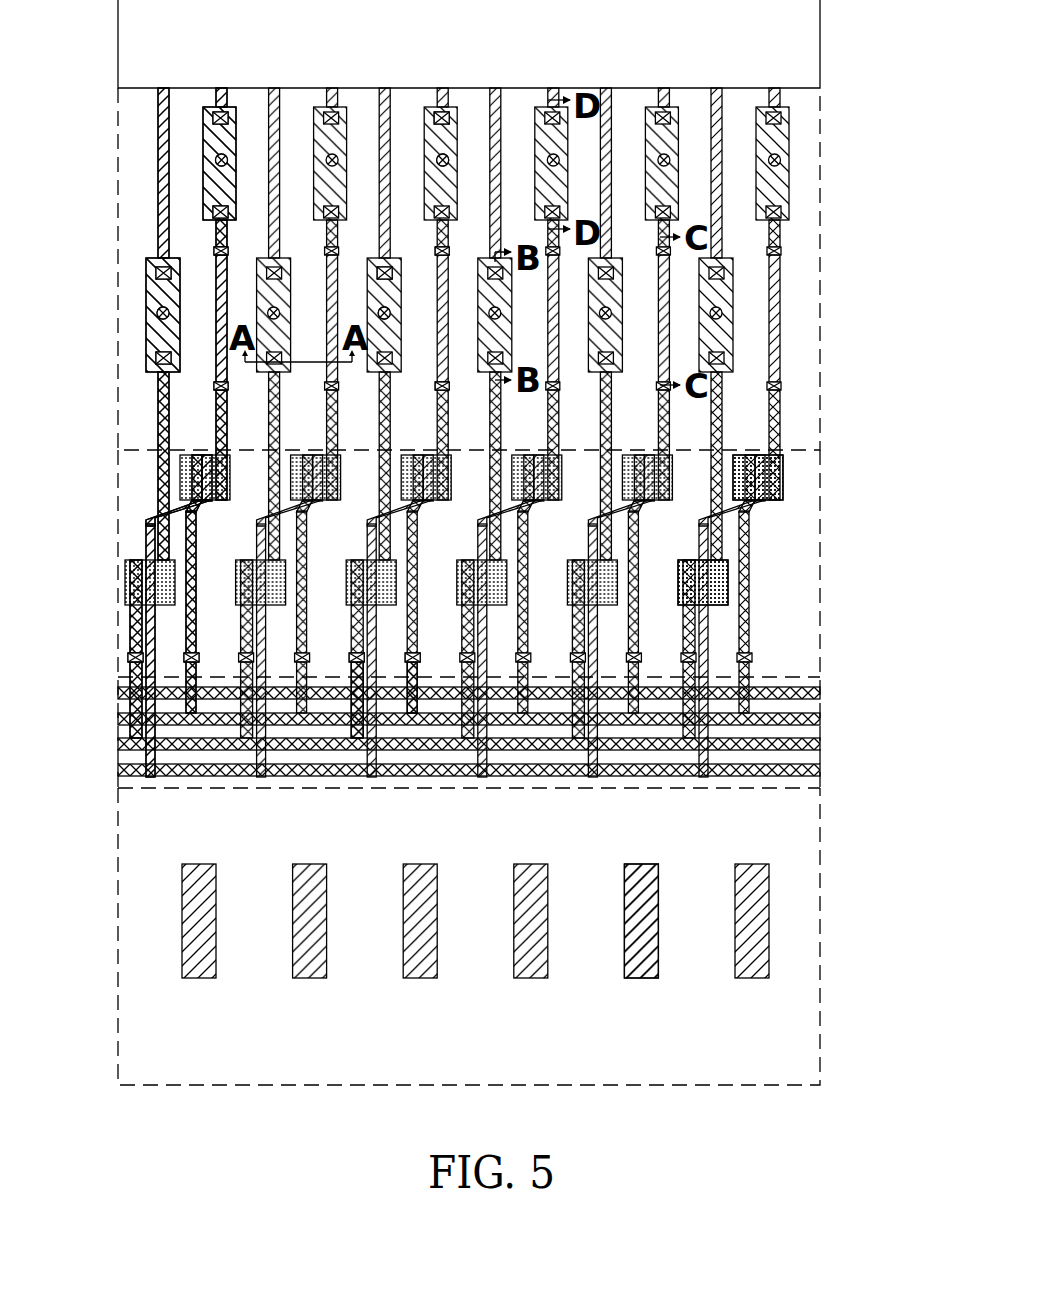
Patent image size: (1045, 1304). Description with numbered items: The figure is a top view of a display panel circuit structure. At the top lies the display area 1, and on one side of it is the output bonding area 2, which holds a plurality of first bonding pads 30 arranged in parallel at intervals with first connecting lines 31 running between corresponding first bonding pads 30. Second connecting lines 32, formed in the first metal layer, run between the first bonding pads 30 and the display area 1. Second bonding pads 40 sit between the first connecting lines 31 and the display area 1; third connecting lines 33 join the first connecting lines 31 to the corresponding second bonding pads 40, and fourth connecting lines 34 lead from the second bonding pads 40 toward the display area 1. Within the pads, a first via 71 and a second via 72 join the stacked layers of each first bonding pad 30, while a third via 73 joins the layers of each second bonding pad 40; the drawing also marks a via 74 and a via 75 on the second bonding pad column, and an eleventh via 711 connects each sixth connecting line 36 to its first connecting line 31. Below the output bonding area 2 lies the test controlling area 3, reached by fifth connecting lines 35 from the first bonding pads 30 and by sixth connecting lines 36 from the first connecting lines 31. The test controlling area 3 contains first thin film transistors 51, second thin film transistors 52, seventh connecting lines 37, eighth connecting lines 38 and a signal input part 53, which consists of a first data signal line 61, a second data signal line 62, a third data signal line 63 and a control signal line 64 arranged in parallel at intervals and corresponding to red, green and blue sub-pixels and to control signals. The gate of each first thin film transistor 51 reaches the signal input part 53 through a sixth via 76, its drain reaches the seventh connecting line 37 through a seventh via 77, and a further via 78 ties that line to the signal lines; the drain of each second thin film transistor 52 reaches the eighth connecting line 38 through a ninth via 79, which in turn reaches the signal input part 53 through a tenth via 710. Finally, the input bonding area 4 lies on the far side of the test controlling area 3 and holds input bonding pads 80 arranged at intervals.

The display area 1 is at (775, 53).
The output bonding area 2 is at (820, 313).
The test controlling area 3 is at (907, 448).
The input bonding area 4 is at (805, 935).
The first bonding pad 30 is at (165, 301).
The first connecting line 31 is at (216, 333).
The second connecting line 32 is at (160, 181).
The third connecting line 33 is at (215, 228).
The fourth connecting line 34 is at (223, 94).
The fifth connecting line 35 is at (165, 420).
The sixth connecting line 36 is at (216, 436).
The seventh connecting line 37 is at (133, 662).
The eighth connecting line 38 is at (190, 661).
The second bonding pad 40 is at (213, 150).
The first thin film transistor 51 is at (733, 582).
The second thin film transistor 52 is at (793, 483).
The signal input part 53 is at (461, 716).
The first data signal line 61 is at (140, 690).
The second data signal line 62 is at (140, 717).
The third data signal line 63 is at (140, 743).
The control signal line 64 is at (140, 770).
The first via 71 is at (386, 268).
The second via 72 is at (387, 317).
The third via 73 is at (453, 109).
The via hole 74 is at (446, 162).
The via hole 75 is at (449, 250).
The sixth via 76 is at (155, 779).
The seventh via 77 is at (358, 660).
The connecting line 78 is at (361, 712).
The ninth via 79 is at (412, 658).
The tenth via 710 is at (418, 690).
The eleventh via 711 is at (443, 390).
The input bonding pad 80 is at (641, 945).